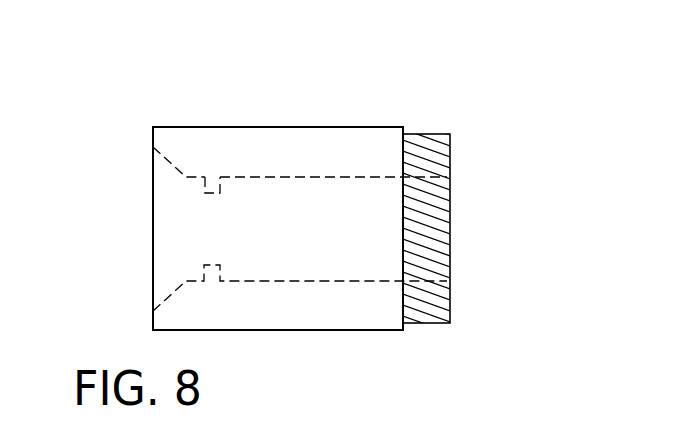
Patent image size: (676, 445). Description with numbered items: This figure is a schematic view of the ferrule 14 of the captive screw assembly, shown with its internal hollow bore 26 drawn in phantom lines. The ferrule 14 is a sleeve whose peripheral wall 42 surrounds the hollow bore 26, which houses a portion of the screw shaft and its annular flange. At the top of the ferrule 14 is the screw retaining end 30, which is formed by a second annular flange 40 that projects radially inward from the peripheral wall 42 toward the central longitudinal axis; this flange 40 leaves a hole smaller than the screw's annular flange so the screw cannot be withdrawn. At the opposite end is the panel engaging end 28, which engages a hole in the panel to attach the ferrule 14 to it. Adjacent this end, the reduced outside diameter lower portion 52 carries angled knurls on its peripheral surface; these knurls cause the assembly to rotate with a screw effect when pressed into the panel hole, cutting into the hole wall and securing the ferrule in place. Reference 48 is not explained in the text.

The ferrule 14 is at (233, 115).
The screw retaining end 30 is at (190, 127).
The peripheral wall 42 is at (300, 177).
The second annular flange 40 is at (208, 194).
The hollow bore 26 is at (297, 281).
The end wall 48 is at (397, 127).
The panel engaging end 28 is at (452, 162).
The reduced outside diameter lower portion 52 is at (450, 302).